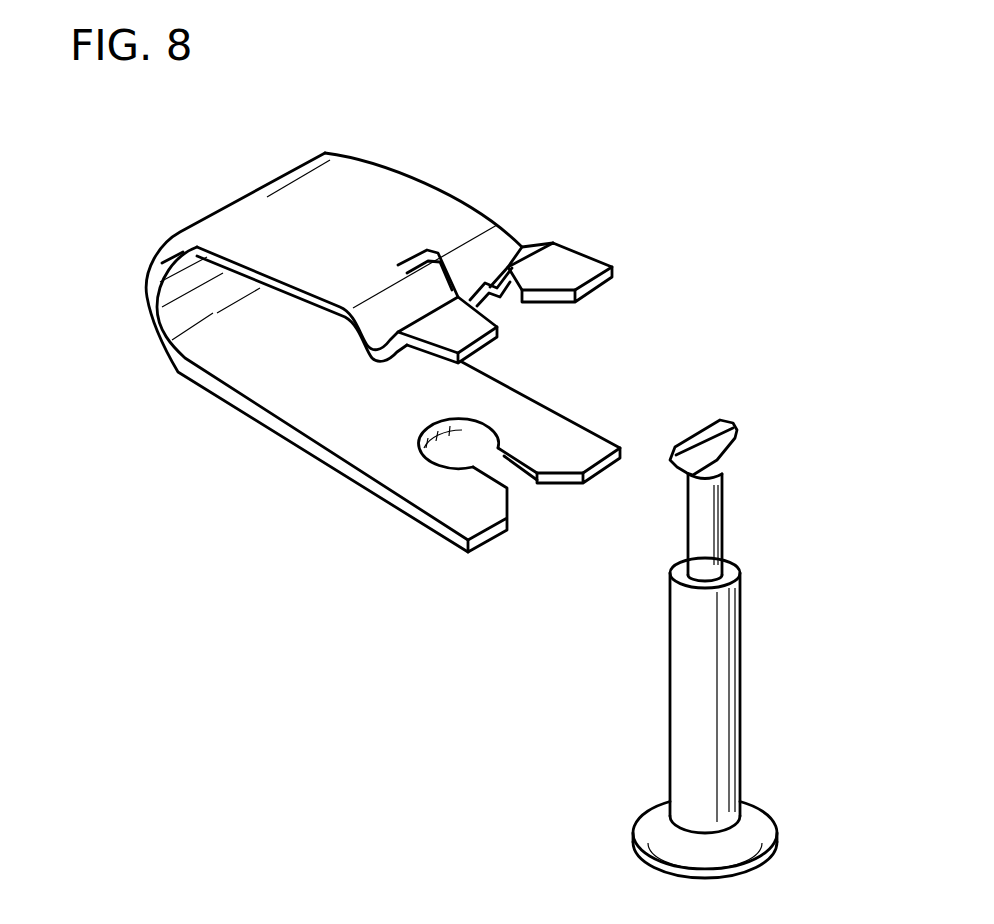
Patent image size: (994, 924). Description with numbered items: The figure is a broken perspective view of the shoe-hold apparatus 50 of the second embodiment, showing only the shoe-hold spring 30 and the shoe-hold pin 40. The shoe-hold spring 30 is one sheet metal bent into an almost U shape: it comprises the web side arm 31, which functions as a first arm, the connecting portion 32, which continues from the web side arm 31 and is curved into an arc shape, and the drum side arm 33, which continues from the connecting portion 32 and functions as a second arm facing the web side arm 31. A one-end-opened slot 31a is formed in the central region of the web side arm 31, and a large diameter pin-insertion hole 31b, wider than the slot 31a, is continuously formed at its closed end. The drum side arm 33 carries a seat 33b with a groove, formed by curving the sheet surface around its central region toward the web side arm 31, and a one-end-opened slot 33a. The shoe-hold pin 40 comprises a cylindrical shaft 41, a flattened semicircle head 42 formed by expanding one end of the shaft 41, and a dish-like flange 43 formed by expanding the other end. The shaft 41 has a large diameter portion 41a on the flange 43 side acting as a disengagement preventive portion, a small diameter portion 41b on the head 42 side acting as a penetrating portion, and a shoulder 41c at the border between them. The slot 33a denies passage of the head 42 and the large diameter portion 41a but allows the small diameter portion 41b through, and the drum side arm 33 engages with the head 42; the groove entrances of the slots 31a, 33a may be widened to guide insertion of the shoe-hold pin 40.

The shoe-hold spring 30 is at (396, 518).
The web side arm 31 is at (278, 440).
The slot 31a is at (520, 458).
The pin-insertion hole 31b is at (478, 428).
The connecting portion 32 is at (246, 198).
The drum side arm 33 is at (414, 180).
The slot 33a is at (507, 268).
The seat 33b is at (398, 265).
The shoe-hold pin 40 is at (672, 630).
The shaft 41 is at (843, 476).
The large diameter portion 41a is at (741, 663).
The small diameter portion 41b is at (727, 523).
The shoulder 41c is at (738, 560).
The head 42 is at (700, 437).
The flange 43 is at (777, 834).
The shoe-hold apparatus 50 is at (220, 628).